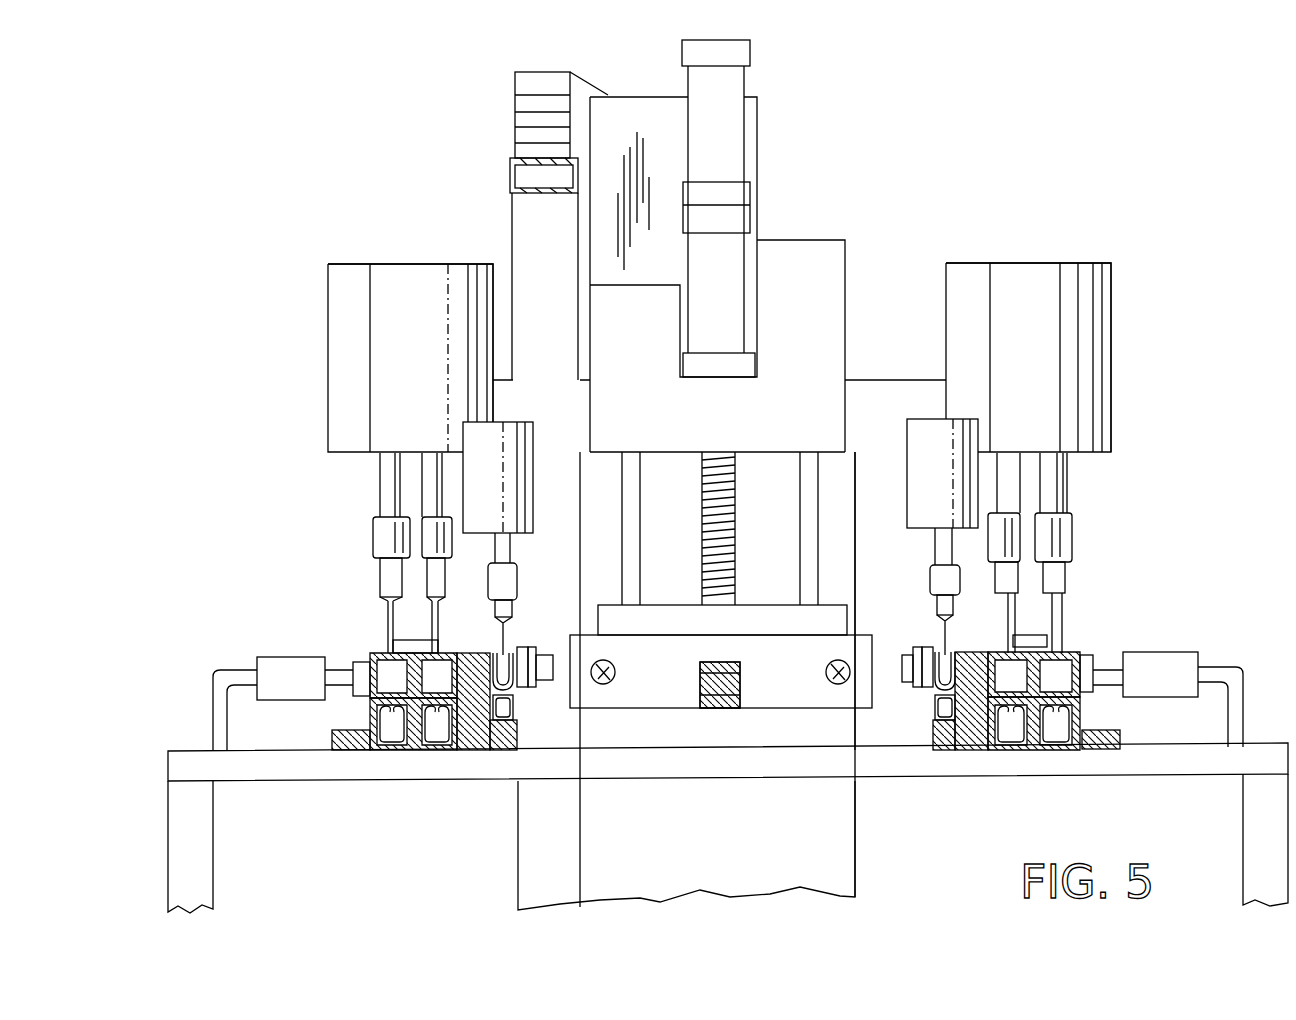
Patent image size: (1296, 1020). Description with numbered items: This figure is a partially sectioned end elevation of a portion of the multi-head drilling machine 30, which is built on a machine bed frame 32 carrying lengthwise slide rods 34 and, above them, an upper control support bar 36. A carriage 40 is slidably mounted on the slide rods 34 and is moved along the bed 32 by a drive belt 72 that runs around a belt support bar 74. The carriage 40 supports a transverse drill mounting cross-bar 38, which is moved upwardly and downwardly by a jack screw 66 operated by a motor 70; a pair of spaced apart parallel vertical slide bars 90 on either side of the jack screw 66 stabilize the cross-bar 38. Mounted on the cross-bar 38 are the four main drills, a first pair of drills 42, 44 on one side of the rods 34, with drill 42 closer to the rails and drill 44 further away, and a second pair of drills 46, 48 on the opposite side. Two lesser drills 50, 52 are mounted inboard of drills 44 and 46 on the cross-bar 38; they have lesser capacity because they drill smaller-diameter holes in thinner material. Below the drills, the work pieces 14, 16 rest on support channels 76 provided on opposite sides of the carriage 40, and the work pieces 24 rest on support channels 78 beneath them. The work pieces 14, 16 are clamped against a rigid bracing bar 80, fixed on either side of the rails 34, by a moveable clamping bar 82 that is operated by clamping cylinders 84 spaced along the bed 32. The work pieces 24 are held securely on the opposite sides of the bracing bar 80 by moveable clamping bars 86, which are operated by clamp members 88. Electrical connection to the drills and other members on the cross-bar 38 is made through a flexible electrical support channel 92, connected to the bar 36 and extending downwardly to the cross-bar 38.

The work piece 14 is at (437, 690).
The work piece 16 is at (393, 680).
The work pieces 24 is at (473, 710).
The multi-head drilling machine 30 is at (1227, 619).
The machine bed frame 32 is at (1183, 758).
The lengthwise slide rods 34 is at (612, 680).
The upper control support bar 36 is at (510, 176).
The transverse drill mounting cross-bar 38 is at (807, 373).
The carriage 40 is at (793, 673).
The drill 42 is at (960, 282).
The drill 44 is at (1102, 317).
The drill 46 is at (340, 322).
The drill 48 is at (408, 282).
The lesser drill 50 is at (930, 478).
The lesser drill 52 is at (483, 478).
The jack screw 66 is at (735, 503).
The motor 70 is at (708, 273).
The drive belt 72 is at (762, 662).
The belt support bar 74 is at (745, 655).
The support channels 76 is at (385, 712).
The support channels 78 is at (522, 703).
The rigid bracing bar 80 is at (468, 733).
The moveable clamping bar 82 is at (363, 667).
The clamping cylinders 84 is at (285, 665).
The moveable clamping bars 86 is at (520, 650).
The clamp members 88 is at (545, 647).
The vertical slide bars 90 is at (797, 492).
The flexible electrical support channel 92 is at (515, 112).